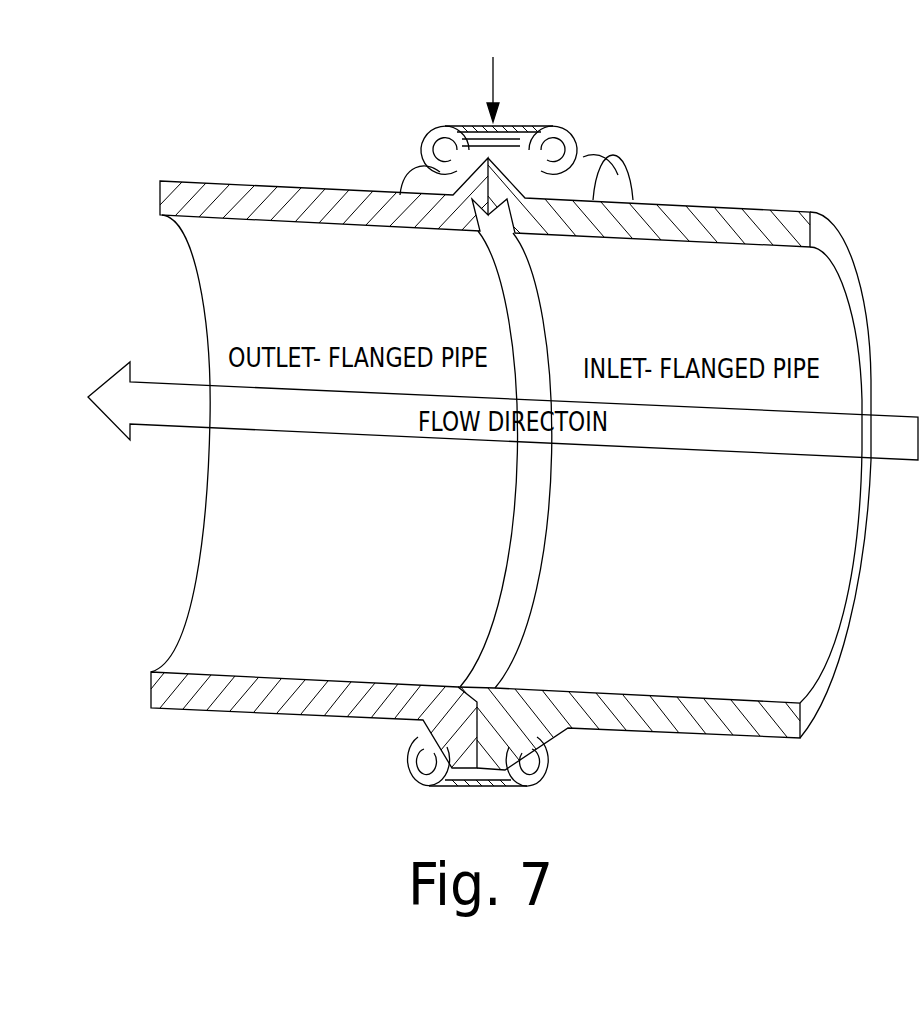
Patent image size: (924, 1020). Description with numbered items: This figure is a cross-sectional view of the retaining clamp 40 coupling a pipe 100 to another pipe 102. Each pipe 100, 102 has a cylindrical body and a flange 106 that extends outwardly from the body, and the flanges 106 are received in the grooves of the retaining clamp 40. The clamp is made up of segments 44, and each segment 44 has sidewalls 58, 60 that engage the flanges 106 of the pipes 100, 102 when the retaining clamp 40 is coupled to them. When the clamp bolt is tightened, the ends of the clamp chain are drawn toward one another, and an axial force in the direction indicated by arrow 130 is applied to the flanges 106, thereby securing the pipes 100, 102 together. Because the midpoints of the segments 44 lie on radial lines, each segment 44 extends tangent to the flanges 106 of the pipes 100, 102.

The retaining clamp 40 is at (516, 408).
The segment 44 is at (553, 126).
The sidewall 58 is at (425, 188).
The sidewall 60 is at (590, 129).
The pipe 100 is at (752, 212).
The pipe 102 is at (236, 182).
The flange 106 is at (427, 200).
The arrow 130 is at (494, 83).